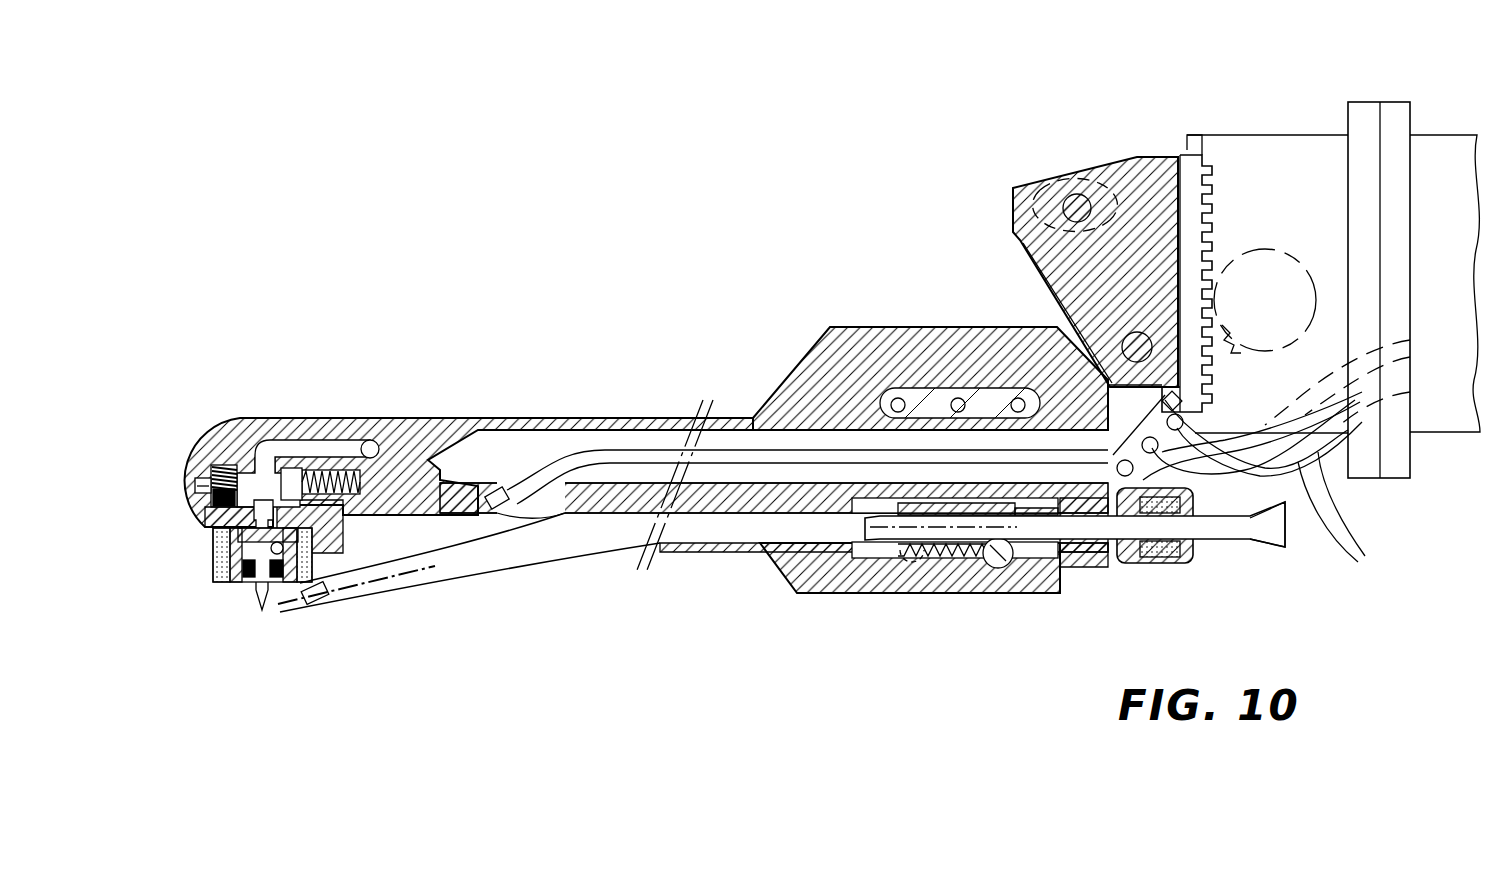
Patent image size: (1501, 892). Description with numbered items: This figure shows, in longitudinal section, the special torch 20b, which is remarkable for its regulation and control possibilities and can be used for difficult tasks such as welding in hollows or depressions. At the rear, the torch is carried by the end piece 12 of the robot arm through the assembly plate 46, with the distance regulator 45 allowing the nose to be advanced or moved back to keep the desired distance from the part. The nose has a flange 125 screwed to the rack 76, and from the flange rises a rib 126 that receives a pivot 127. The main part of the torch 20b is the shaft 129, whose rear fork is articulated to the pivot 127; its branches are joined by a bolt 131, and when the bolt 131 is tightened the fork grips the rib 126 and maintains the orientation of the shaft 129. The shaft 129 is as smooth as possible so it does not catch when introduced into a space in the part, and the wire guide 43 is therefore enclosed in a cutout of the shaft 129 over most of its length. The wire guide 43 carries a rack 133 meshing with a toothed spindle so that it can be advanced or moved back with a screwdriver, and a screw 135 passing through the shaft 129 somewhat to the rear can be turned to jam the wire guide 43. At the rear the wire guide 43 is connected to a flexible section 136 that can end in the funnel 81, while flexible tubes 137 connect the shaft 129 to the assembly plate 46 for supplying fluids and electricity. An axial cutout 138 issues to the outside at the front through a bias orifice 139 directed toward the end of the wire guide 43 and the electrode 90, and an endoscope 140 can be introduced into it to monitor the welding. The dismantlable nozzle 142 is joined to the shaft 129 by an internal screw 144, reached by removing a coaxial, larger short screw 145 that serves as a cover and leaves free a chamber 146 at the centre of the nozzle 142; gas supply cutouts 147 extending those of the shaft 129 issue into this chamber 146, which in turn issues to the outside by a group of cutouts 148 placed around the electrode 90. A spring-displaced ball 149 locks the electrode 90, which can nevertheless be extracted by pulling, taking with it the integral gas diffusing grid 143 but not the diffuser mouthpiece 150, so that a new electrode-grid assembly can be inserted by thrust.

The end piece 12 is at (1430, 135).
The torch 20b is at (783, 655).
The wire guide 43 is at (470, 560).
The distance regulator 45 is at (1280, 135).
The assembly plate 46 is at (1355, 102).
The rack 76 is at (1198, 158).
The funnel 81 is at (1280, 528).
The electrode 90 is at (262, 598).
The flange 125 is at (1158, 162).
The rib 126 is at (1042, 275).
The pivot 127 is at (1122, 344).
The shaft 129 is at (690, 552).
The bolt 131 is at (1080, 194).
The rack 133 is at (945, 556).
The screw 135 is at (1000, 570).
The flexible section 136 is at (1219, 545).
The flexible tubes 137 is at (1353, 520).
The cutout 138 is at (598, 447).
The bias orifice 139 is at (556, 511).
The endoscope 140 is at (645, 450).
The nozzle 142 is at (220, 593).
The gas diffusing grid 143 is at (277, 560).
The internal screw 144 is at (358, 483).
The short screw 145 is at (218, 470).
The chamber 146 is at (260, 470).
The gas supply cutouts 147 is at (343, 440).
The cutouts 148 is at (215, 522).
The ball 149 is at (318, 595).
The diffuser mouthpiece 150 is at (326, 572).